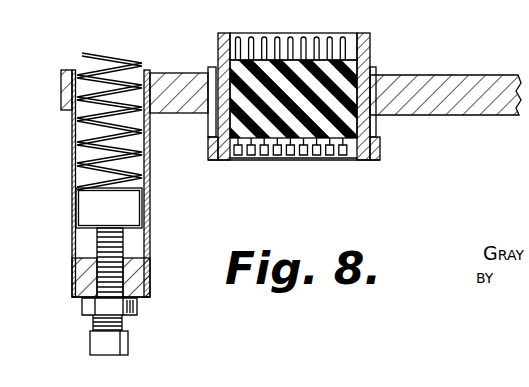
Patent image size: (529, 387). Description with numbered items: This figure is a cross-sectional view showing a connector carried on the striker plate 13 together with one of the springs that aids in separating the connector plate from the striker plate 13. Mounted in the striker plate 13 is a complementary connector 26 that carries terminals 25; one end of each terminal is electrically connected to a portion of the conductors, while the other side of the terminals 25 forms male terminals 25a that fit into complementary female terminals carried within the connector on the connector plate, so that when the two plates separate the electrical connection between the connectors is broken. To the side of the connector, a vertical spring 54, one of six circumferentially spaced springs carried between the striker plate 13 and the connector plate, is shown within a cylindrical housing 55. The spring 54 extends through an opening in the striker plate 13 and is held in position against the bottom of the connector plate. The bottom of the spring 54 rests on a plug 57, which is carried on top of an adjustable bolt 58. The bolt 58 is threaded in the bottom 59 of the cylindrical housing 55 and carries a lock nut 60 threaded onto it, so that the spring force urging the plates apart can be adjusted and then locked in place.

The striker plate 13 is at (167, 73).
The terminals 25 is at (352, 147).
The male terminals 25a is at (347, 33).
The complementary connector 26 is at (368, 62).
The springs 54 is at (107, 54).
The cylindrical housing 55 is at (150, 168).
The plug 57 is at (78, 206).
The adjustable bolt 58 is at (122, 243).
The bottom of the cylindrical housing 59 is at (150, 271).
The lock nut 60 is at (137, 306).